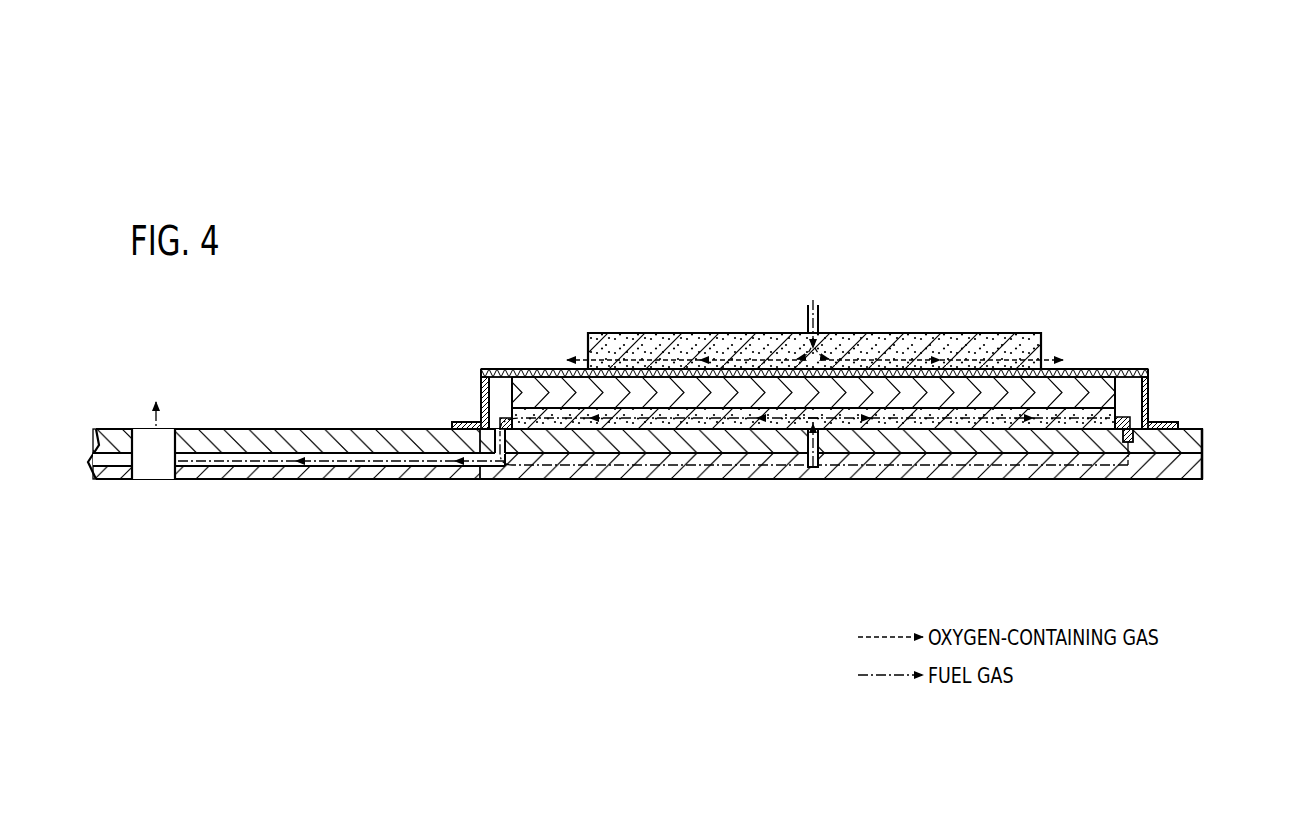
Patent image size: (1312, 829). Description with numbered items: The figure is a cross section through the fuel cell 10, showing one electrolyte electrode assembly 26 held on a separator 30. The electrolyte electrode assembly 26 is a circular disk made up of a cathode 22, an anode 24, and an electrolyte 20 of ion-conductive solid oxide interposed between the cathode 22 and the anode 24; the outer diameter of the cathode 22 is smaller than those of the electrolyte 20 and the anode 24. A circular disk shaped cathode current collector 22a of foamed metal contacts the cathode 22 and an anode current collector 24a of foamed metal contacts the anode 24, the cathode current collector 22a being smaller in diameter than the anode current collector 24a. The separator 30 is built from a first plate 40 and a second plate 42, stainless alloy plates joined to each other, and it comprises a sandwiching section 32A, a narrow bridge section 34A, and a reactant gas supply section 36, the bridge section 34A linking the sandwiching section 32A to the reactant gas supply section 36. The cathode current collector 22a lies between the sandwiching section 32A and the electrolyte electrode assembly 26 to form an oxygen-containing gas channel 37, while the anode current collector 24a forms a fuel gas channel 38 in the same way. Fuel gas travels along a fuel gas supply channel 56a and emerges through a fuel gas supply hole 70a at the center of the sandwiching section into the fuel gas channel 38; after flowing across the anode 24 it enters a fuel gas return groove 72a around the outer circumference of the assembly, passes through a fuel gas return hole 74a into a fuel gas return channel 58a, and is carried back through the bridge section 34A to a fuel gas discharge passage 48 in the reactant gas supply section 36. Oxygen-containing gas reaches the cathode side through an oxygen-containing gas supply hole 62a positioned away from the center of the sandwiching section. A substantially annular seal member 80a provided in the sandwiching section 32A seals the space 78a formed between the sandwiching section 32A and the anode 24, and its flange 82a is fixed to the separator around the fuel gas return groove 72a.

The fuel cell 10 is at (1045, 257).
The electrolyte 20 is at (540, 370).
The cathode 22 is at (587, 366).
The anode 24 is at (512, 394).
The electrolyte electrode assembly 26 is at (786, 338).
The cathode current collector 22a is at (638, 348).
The anode current collector 24a is at (653, 432).
The separator 30 is at (690, 449).
The sandwiching section 32A is at (1013, 484).
The bridge section 34A is at (233, 423).
The reactant gas supply section 36 is at (137, 423).
The oxygen-containing gas channel 37 is at (929, 348).
The fuel gas channel 38 is at (719, 431).
The first plate 40 is at (1208, 468).
The second plate 42 is at (1208, 439).
The fuel gas discharge passage 48 is at (144, 472).
The fuel gas supply channel 56a is at (576, 468).
The fuel gas return channel 58a is at (220, 464).
The oxygen-containing gas supply hole 62a is at (806, 326).
The fuel gas supply hole 70a is at (822, 438).
The fuel gas return groove 72a is at (1135, 437).
The fuel gas return hole 74a is at (487, 470).
The space 78a is at (482, 392).
The seal member 80a is at (1139, 362).
The flange 82a is at (476, 422).